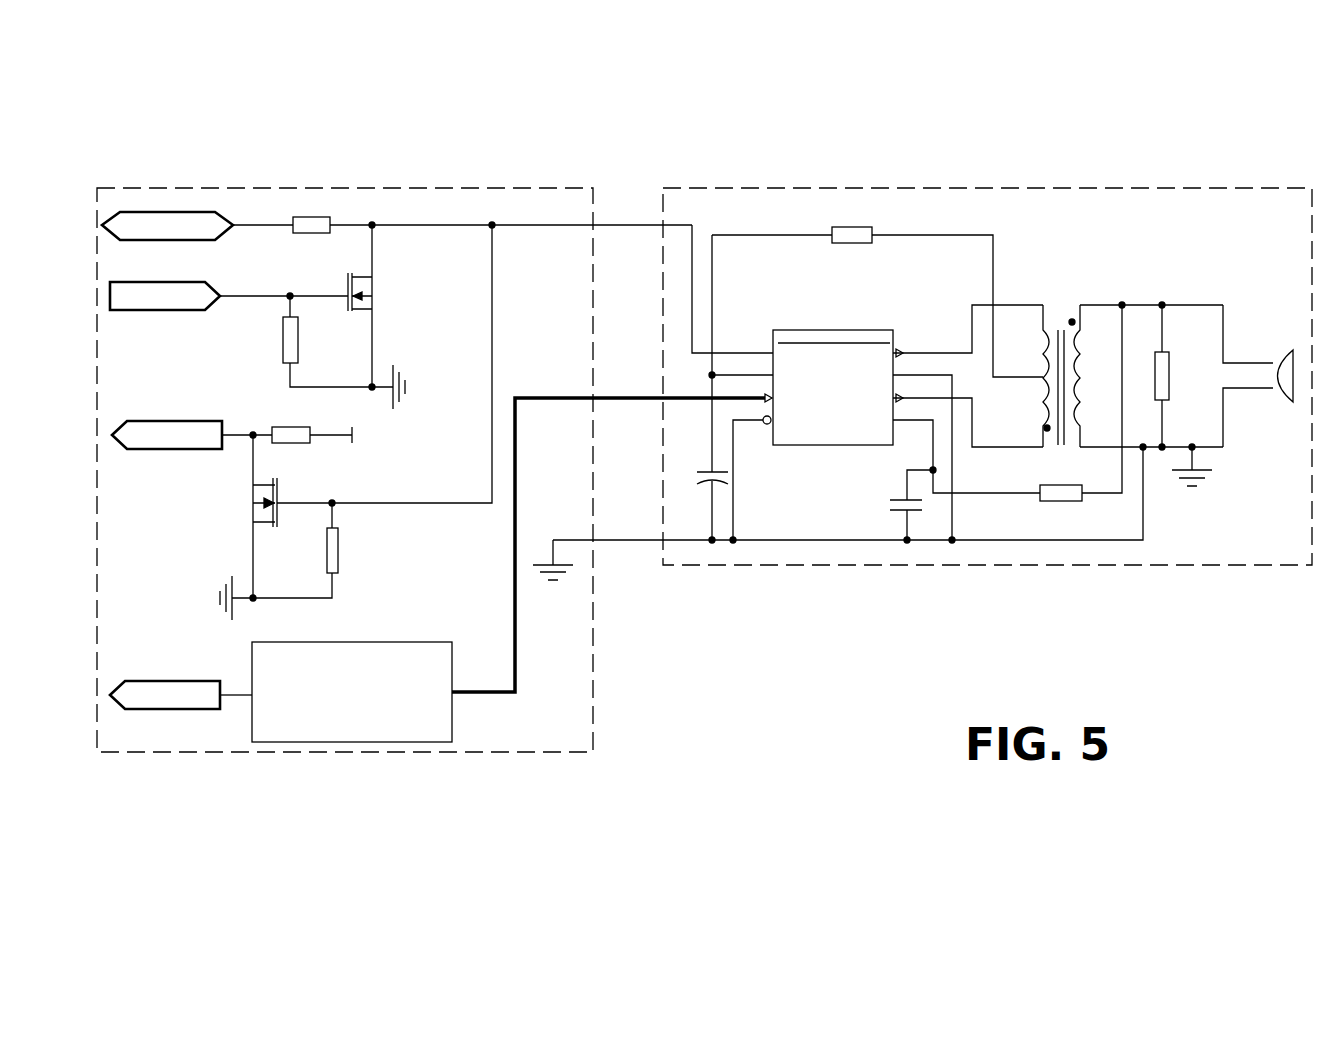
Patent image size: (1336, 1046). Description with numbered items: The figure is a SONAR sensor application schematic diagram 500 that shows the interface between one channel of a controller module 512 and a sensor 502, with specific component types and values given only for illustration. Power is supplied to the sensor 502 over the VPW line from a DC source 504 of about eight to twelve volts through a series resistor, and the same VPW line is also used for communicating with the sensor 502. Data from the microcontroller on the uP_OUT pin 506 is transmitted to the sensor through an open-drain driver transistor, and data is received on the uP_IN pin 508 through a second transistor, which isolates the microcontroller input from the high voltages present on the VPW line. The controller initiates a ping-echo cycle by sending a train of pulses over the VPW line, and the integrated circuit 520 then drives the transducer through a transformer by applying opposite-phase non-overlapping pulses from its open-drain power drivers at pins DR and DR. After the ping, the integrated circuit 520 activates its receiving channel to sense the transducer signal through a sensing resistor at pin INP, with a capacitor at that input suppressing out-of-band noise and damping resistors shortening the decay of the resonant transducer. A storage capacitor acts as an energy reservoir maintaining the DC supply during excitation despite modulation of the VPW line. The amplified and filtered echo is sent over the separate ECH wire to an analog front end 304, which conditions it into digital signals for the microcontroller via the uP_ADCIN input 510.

The SONAR sensor application schematic diagram 500 is at (1188, 86).
The sensor 502 is at (410, 178).
The DC source 504 is at (165, 196).
The uP_OUT pin 506 is at (190, 275).
The uP_IN pin 508 is at (190, 412).
The uP_ADCIN microprocessor ADC input 510 is at (190, 675).
The controller module 512 is at (927, 182).
The integrated circuit 520 is at (828, 318).
The analog front end 304 is at (380, 632).